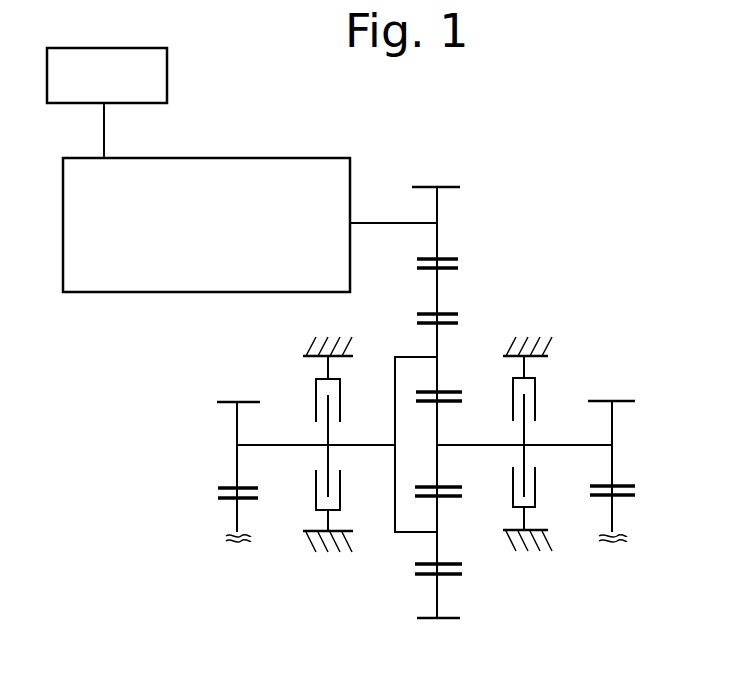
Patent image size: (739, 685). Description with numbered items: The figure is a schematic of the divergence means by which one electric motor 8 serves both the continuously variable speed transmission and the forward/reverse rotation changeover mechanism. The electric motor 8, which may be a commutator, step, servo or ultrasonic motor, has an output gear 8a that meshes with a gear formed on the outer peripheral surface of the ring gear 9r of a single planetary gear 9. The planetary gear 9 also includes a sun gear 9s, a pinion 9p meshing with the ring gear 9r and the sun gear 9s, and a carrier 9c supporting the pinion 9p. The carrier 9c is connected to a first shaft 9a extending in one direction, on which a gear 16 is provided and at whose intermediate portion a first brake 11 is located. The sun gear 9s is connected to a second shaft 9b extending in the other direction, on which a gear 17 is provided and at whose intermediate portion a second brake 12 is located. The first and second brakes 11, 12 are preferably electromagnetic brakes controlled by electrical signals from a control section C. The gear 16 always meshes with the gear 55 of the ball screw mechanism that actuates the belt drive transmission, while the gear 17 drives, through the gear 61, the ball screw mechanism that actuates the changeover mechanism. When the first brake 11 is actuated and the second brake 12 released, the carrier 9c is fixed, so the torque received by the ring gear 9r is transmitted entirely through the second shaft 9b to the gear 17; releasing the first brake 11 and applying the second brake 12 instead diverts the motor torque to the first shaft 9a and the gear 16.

The control section C is at (167, 78).
The electric motor 8 is at (290, 158).
The output gear 8a is at (437, 208).
The single planetary gear 9 is at (459, 343).
The ring gear 9r is at (437, 294).
The carrier 9c is at (410, 357).
The pinion 9p is at (437, 385).
The sun gear 9s is at (437, 430).
The first shaft 9a is at (374, 445).
The second shaft 9b is at (554, 445).
The first brake 11 is at (312, 398).
The second brake 12 is at (537, 396).
The gear 16 is at (237, 472).
The gear 17 is at (612, 465).
The gear of the ball screw mechanism 55 is at (237, 526).
The gear 61 is at (612, 512).